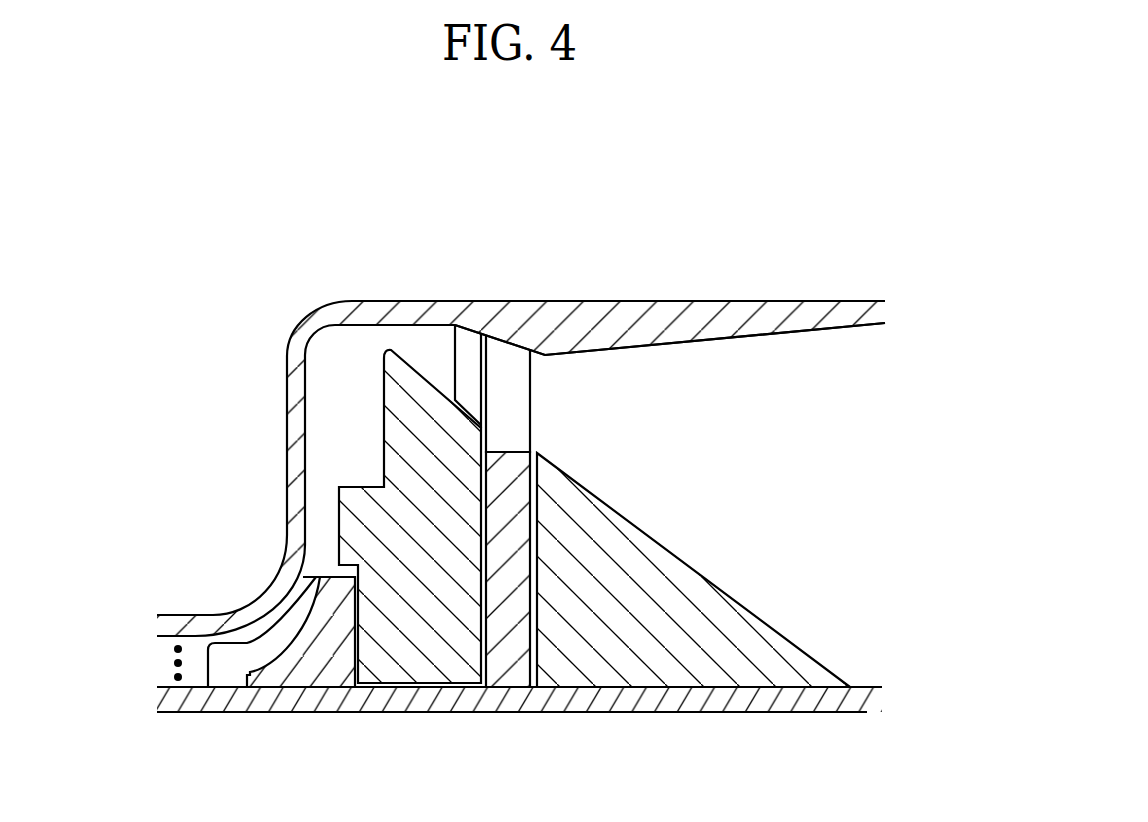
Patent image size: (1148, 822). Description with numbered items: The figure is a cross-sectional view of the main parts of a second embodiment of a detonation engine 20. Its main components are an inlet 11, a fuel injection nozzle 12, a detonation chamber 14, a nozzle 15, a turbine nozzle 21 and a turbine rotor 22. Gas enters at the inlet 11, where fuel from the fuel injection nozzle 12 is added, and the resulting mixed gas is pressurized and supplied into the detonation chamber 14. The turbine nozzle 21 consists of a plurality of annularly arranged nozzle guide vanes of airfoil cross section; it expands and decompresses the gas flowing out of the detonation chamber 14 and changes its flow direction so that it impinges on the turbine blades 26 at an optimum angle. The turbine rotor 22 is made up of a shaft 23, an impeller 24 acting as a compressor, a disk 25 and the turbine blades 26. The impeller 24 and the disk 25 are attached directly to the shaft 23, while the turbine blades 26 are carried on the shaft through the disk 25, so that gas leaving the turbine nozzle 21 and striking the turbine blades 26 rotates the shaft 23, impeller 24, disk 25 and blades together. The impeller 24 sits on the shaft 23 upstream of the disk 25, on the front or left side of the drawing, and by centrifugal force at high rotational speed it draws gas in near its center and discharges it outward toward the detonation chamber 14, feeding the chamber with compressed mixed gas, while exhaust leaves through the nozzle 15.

The inlet 11 is at (163, 660).
The fuel injection nozzle 12 is at (210, 673).
The detonation chamber 14 is at (342, 388).
The nozzle 15 is at (605, 382).
The detonation engine 20 is at (521, 410).
The turbine nozzle 21 is at (457, 347).
The turbine rotor 22 is at (562, 508).
The shaft 23 is at (424, 698).
The impeller 24 is at (275, 640).
The disk 25 is at (518, 565).
The turbine blades 26 is at (505, 362).